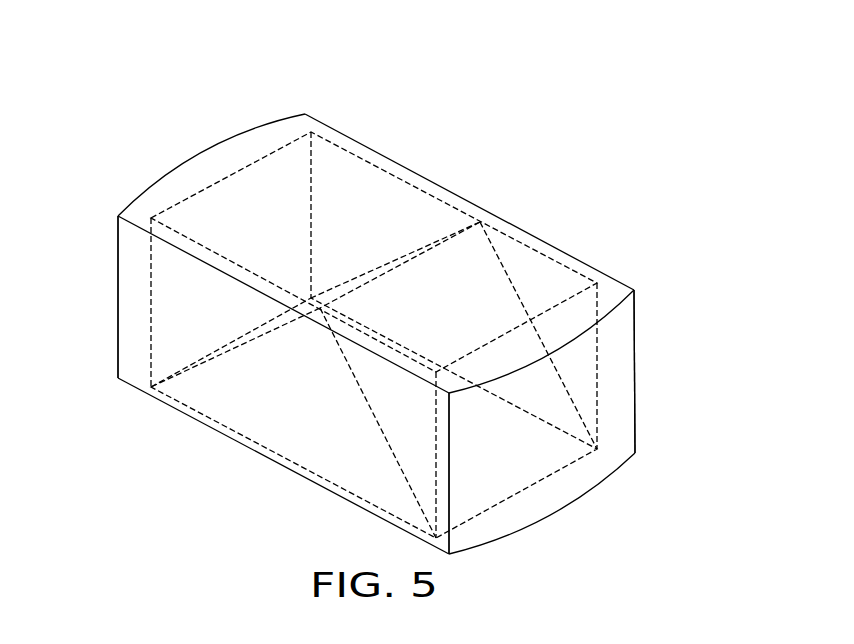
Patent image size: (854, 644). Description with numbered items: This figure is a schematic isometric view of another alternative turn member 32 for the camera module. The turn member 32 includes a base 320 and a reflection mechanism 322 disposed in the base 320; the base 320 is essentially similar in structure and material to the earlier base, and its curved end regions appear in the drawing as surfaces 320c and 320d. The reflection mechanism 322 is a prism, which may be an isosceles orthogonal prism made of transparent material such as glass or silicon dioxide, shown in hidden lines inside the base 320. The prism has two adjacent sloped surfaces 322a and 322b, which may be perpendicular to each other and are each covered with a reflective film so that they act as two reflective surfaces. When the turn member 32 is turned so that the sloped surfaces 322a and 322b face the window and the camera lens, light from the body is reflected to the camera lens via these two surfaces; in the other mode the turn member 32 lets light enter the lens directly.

The turn member 32 is at (392, 84).
The base 320 is at (627, 286).
The first curved end surface 320c is at (130, 280).
The second curved end surface 320d is at (636, 353).
The reflection mechanism 322 is at (400, 267).
The sloped surface 322a is at (349, 288).
The sloped surface 322b is at (452, 304).